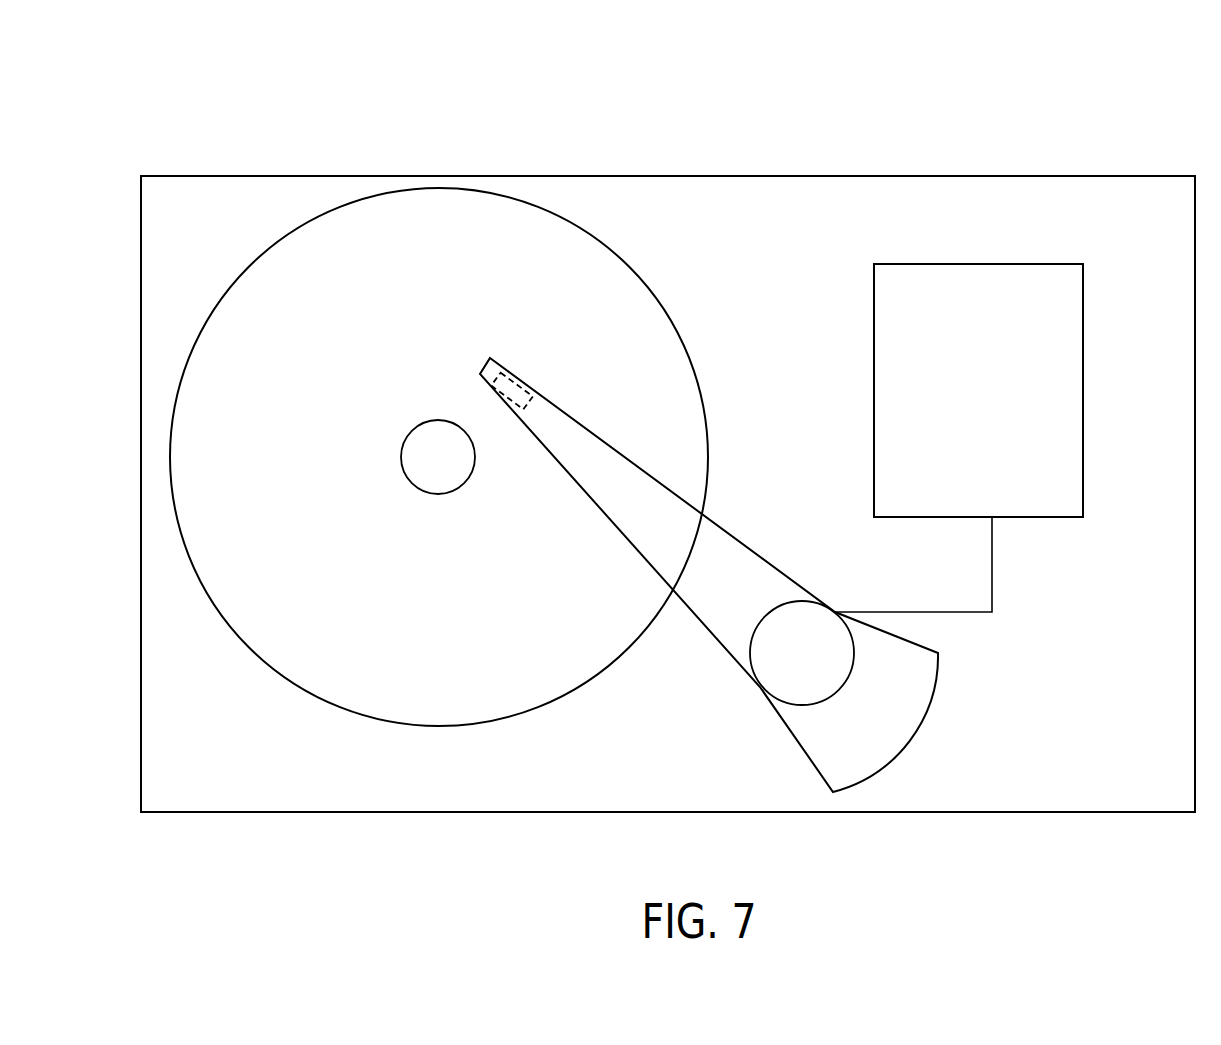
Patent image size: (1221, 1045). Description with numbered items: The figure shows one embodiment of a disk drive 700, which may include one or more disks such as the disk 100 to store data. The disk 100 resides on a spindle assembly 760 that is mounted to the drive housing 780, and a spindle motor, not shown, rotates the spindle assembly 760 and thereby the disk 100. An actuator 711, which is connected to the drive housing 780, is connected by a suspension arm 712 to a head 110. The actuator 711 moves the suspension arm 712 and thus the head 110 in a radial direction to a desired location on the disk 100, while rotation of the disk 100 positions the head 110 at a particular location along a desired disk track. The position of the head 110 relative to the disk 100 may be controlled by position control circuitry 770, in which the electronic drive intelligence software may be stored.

The disk drive 700 is at (1165, 80).
The drive housing 780 is at (817, 176).
The disk 100 is at (302, 690).
The spindle assembly 760 is at (438, 457).
The suspension arm 712 is at (709, 575).
The actuator 711 is at (802, 653).
The position control circuitry 770 is at (959, 438).
The head 110 is at (508, 373).